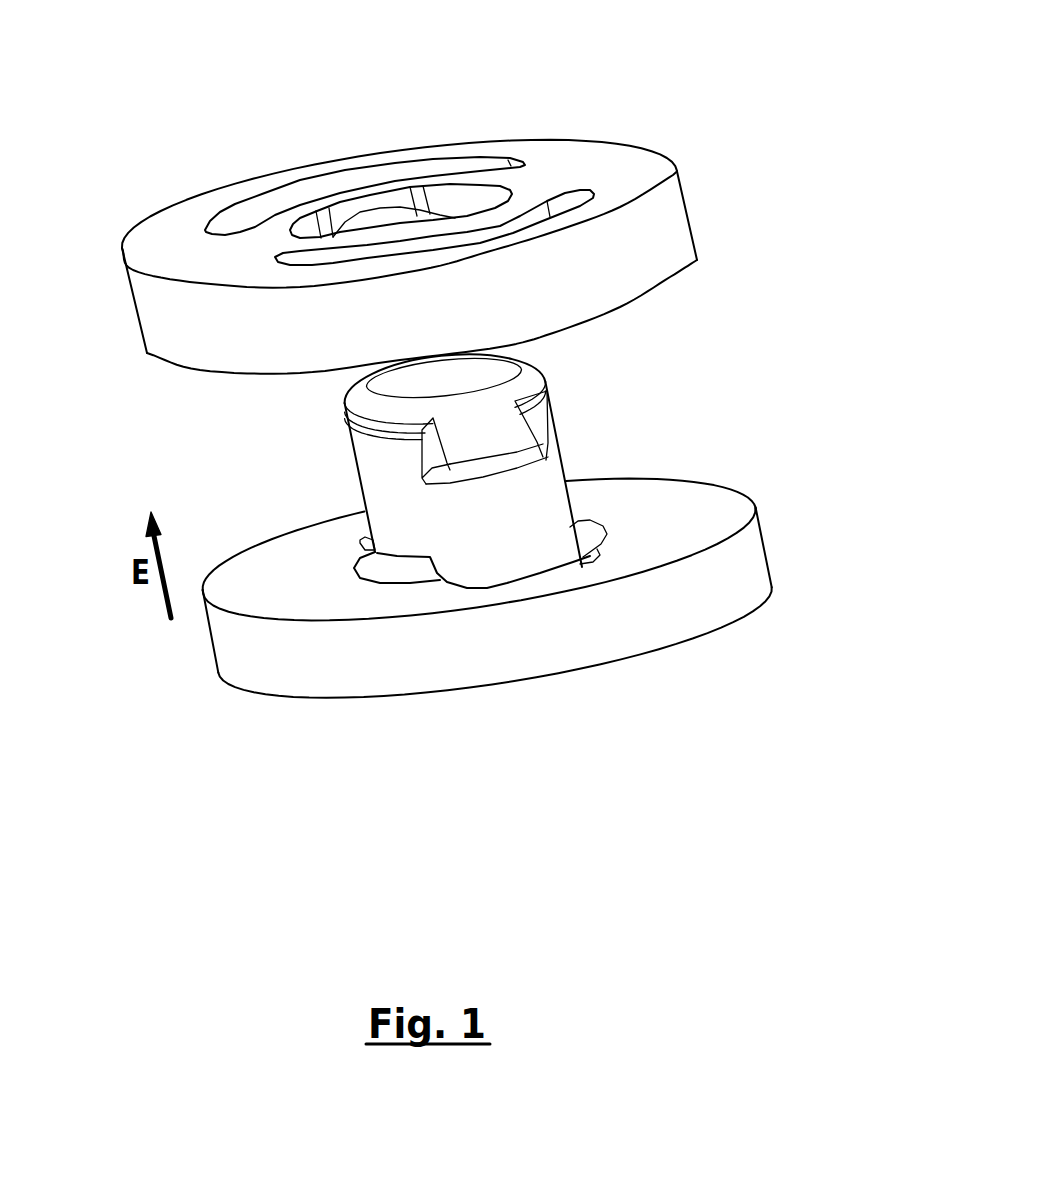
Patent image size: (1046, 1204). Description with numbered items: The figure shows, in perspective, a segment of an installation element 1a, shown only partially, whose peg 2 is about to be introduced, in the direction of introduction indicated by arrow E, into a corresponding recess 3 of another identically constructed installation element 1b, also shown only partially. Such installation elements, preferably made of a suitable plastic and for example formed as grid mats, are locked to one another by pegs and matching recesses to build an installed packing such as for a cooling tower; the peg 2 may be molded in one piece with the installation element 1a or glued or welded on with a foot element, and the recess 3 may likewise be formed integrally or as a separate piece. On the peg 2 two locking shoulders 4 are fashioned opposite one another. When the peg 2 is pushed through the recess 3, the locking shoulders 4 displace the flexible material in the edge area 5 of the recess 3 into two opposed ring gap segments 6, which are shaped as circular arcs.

The installation element 1a is at (434, 657).
The installation element 1b is at (647, 147).
The peg 2 is at (410, 513).
The recess 3 is at (453, 204).
The locking shoulder 4 is at (512, 437).
The edge area 5 is at (357, 191).
The ring gap segment 6 is at (468, 166).